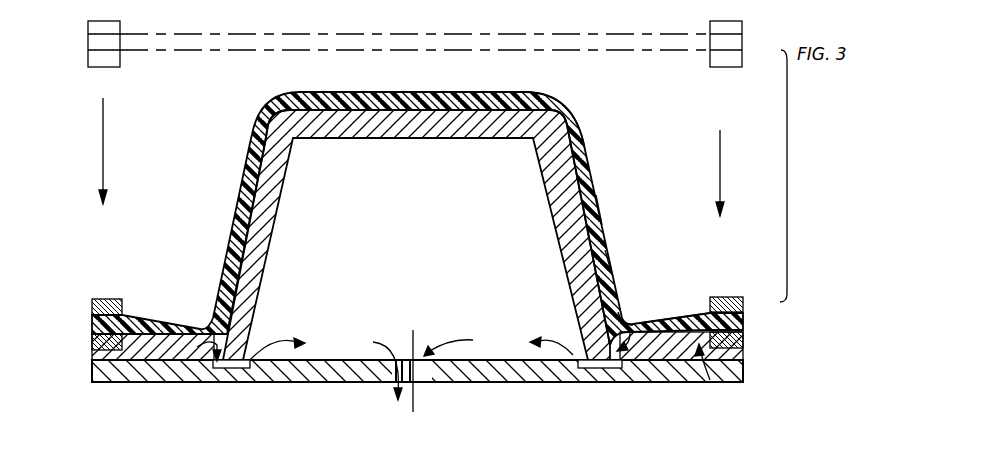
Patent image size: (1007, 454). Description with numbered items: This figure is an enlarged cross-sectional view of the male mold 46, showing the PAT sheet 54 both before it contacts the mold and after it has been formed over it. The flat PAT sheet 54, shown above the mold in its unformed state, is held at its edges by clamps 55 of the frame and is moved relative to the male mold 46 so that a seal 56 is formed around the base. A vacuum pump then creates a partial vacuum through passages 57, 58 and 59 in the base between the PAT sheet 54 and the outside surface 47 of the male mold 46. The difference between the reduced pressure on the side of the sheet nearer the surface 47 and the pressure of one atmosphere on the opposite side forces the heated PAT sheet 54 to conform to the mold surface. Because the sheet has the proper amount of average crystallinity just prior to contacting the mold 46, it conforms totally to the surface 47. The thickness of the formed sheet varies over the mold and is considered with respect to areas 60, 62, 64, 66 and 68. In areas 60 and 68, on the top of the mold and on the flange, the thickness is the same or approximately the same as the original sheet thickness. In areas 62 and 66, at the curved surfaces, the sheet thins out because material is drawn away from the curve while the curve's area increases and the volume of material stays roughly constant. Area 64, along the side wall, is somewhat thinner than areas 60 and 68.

The male mold 46 is at (508, 139).
The outside surface 47 is at (605, 262).
The PAT sheet 54 is at (322, 36).
The clamps 55 is at (88, 58).
The seal 56 is at (150, 334).
The passage 57 is at (210, 346).
The passage 58 is at (625, 342).
The passage 59 is at (425, 383).
The area 60 is at (450, 66).
The area 62 is at (570, 100).
The area 64 is at (610, 202).
The area 66 is at (632, 308).
The area 68 is at (665, 318).